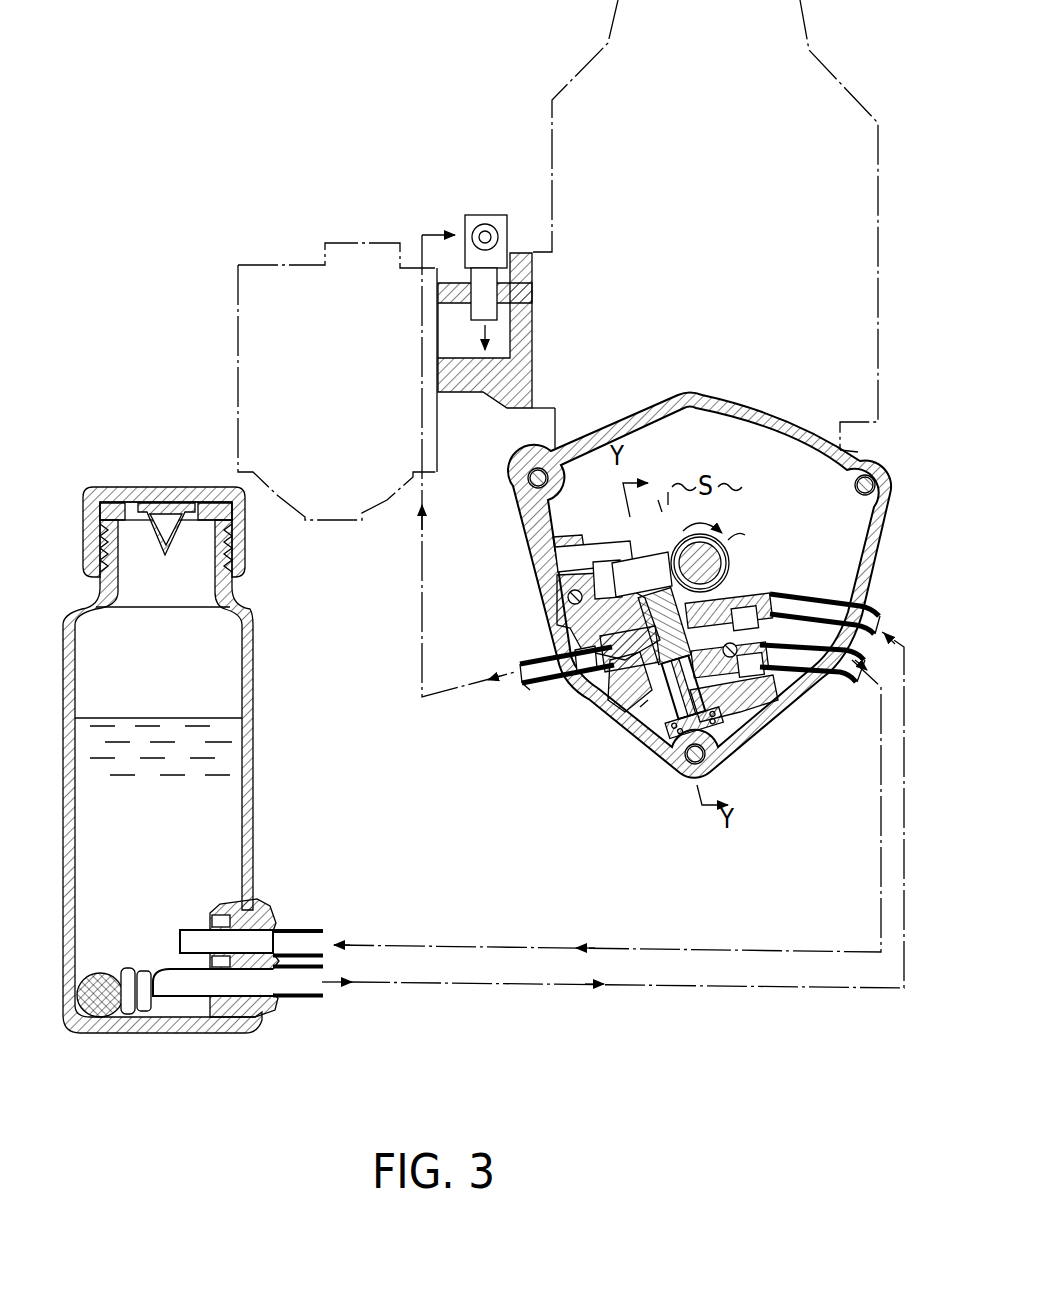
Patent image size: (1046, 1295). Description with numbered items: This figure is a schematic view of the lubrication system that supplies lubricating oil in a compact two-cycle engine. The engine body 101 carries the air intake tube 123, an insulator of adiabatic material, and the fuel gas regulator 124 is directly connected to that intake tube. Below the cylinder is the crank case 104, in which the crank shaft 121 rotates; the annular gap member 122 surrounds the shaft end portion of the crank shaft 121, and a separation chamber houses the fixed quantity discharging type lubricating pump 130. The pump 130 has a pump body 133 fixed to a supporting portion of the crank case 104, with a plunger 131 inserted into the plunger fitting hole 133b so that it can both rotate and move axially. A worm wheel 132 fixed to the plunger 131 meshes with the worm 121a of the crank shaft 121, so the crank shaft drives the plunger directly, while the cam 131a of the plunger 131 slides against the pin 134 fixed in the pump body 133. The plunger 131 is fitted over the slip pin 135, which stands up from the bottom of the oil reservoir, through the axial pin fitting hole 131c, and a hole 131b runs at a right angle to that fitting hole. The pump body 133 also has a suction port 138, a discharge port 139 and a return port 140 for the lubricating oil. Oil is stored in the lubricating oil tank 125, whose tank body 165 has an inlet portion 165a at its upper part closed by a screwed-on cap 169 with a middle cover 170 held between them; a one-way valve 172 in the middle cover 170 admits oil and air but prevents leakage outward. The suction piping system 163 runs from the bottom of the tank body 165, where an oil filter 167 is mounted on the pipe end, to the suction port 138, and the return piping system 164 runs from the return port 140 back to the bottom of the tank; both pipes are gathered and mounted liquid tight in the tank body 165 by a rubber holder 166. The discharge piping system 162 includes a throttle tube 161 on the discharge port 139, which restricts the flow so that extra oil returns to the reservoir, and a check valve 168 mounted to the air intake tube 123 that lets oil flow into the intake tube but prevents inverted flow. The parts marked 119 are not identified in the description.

The engine body 101 is at (583, 65).
The crank case 104 is at (787, 712).
The bolt 119 is at (522, 462).
The crank shaft 121 is at (727, 543).
The worm 121a is at (729, 540).
The gap member 122 is at (858, 452).
The air intake tube 123 is at (527, 250).
The fuel gas regulator 124 is at (290, 265).
The lubricating oil tank 125 is at (200, 746).
The lubricating pump 130 is at (640, 707).
The plunger 131 is at (642, 748).
The cam 131a is at (658, 500).
The hole 131b is at (602, 648).
The axial pin fitting hole 131c is at (683, 603).
The worm wheel 132 is at (668, 492).
The pump body 133 is at (790, 722).
The plunger fitting hole 133b is at (715, 595).
The pin 134 is at (602, 540).
The slip pin 135 is at (674, 752).
The suction port 138 is at (715, 608).
The discharge port 139 is at (548, 652).
The return port 140 is at (790, 707).
The throttle tube 161 is at (553, 688).
The discharge piping system 162 is at (415, 605).
The suction piping system 163 is at (427, 983).
The return piping system 164 is at (400, 945).
The tank body 165 is at (188, 1035).
The inlet portion 165a is at (237, 550).
The rubber holder 166 is at (273, 913).
The oil filter 167 is at (112, 973).
The check valve 168 is at (463, 218).
The cap 169 is at (205, 498).
The middle cover 170 is at (110, 500).
The one-way valve 172 is at (168, 513).